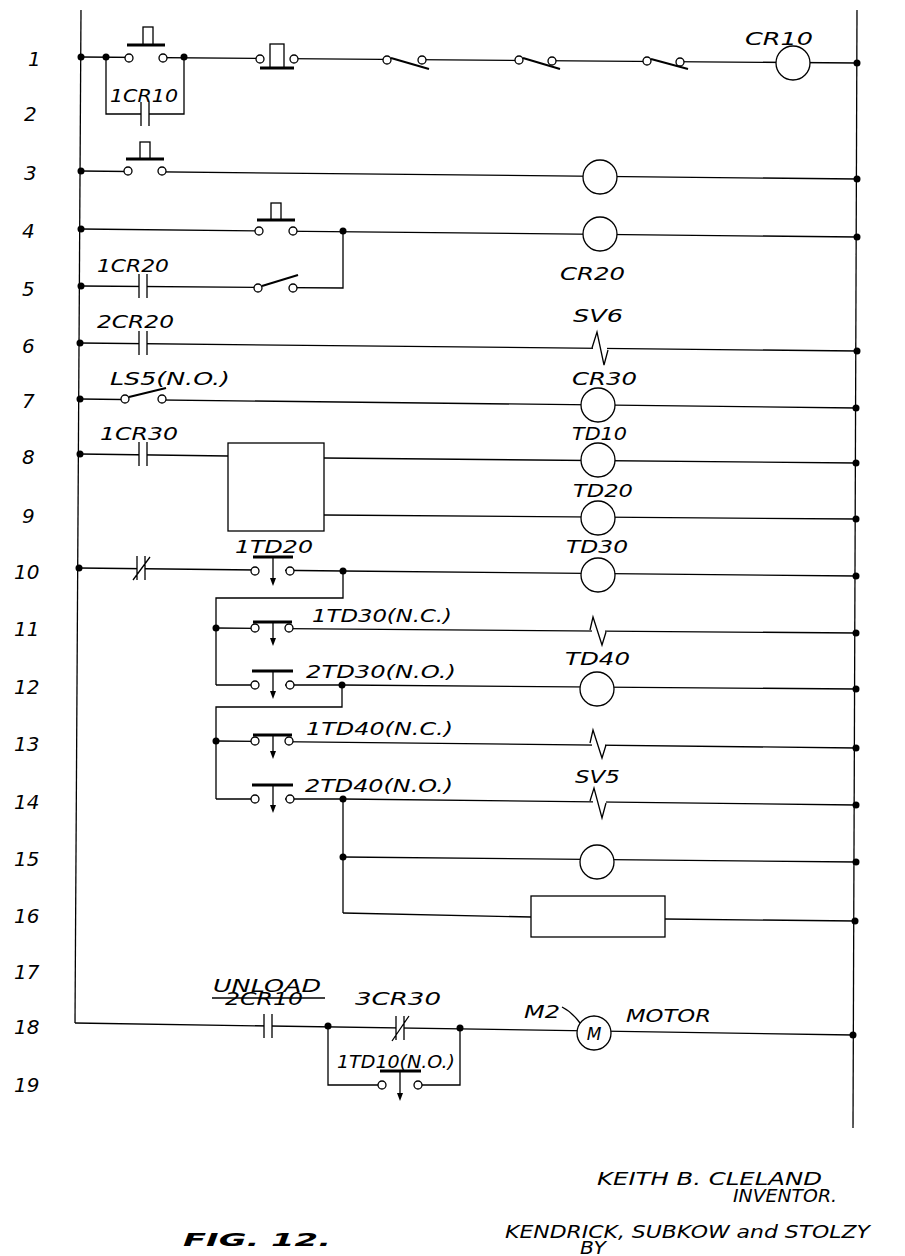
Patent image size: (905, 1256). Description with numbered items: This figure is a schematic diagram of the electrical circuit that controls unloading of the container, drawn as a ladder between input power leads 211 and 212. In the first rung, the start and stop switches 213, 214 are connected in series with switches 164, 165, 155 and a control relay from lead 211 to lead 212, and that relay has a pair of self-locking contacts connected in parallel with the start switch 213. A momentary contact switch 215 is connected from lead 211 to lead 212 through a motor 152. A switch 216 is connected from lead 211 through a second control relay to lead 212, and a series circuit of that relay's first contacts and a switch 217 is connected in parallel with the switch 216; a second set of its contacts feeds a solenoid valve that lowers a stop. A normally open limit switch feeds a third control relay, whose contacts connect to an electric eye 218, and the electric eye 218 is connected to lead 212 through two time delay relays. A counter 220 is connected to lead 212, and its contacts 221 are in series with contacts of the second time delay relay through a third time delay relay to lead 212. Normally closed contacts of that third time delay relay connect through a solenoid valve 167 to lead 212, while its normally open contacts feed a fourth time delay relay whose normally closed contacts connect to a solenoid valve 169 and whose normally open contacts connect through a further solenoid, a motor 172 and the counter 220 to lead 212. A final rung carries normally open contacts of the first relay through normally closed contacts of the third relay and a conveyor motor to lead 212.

The input power lead 211 is at (78, 18).
The input power lead 212 is at (860, 45).
The start switch 213 is at (157, 46).
The stop push button 214 is at (287, 46).
The switch 164 is at (406, 66).
The switch 165 is at (528, 58).
The switch 155 is at (680, 37).
The motor 152 is at (618, 168).
The momentary contact switch 215 is at (147, 163).
The switch 216 is at (263, 213).
The switch 217 is at (268, 285).
The electric eye 218 is at (310, 443).
The contacts 221 is at (139, 558).
The solenoid valve 167 is at (602, 619).
The solenoid valve 169 is at (603, 739).
The motor 172 is at (579, 857).
The counter 220 is at (650, 937).